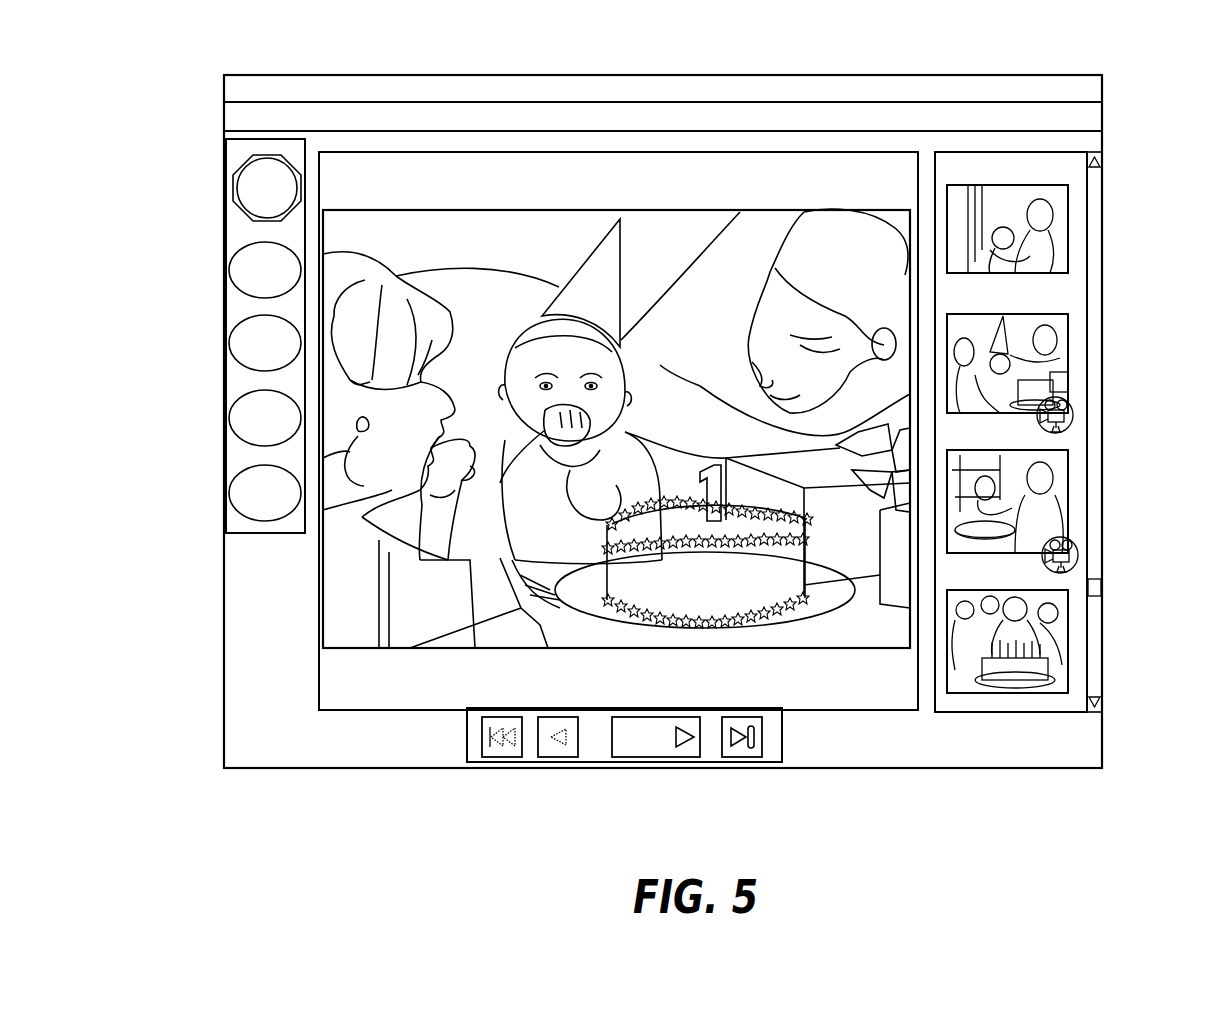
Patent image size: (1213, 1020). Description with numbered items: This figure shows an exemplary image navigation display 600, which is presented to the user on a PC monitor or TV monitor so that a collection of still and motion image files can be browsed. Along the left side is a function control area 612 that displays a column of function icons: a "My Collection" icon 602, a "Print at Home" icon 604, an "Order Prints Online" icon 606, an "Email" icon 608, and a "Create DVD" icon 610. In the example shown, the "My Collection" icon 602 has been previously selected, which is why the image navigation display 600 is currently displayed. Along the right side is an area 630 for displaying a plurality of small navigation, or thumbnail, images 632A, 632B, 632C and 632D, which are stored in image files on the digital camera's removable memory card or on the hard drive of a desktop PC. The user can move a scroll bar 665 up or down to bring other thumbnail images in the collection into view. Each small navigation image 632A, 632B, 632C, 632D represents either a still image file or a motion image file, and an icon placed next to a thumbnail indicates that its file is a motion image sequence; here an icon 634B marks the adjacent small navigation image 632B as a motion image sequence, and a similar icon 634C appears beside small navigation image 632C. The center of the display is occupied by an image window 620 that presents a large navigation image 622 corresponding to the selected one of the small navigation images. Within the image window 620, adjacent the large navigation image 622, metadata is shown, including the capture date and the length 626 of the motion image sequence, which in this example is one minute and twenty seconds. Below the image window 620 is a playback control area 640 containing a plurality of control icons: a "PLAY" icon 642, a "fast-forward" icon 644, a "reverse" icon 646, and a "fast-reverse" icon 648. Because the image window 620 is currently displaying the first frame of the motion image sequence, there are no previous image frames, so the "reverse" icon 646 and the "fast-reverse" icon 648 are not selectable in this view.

The image navigation display 600 is at (951, 73).
The "My Collection" icon 602 is at (238, 193).
The "Print at Home" icon 604 is at (238, 268).
The "Order Prints Online" icon 606 is at (238, 343).
The "Email" icon 608 is at (238, 418).
The "Create DVD" icon 610 is at (238, 493).
The function control area 612 is at (238, 522).
The image window 620 is at (595, 150).
The large navigation image 622 is at (768, 210).
The length of the motion image sequence 626 is at (873, 698).
The area for displaying small navigation images 630 is at (1063, 170).
The small navigation image 632A is at (1068, 222).
The small navigation image 632B is at (1068, 335).
The small navigation image 632C is at (1068, 478).
The small navigation image 632D is at (1068, 660).
The motion image file icon 634B is at (1073, 418).
The motion image file icon 634C is at (1078, 556).
The playback control area 640 is at (772, 739).
The "PLAY" icon 642 is at (656, 758).
The "fast-forward" icon 644 is at (740, 758).
The "reverse" icon 646 is at (492, 758).
The "fast-reverse" icon 648 is at (562, 758).
The scroll bar 665 is at (1095, 617).